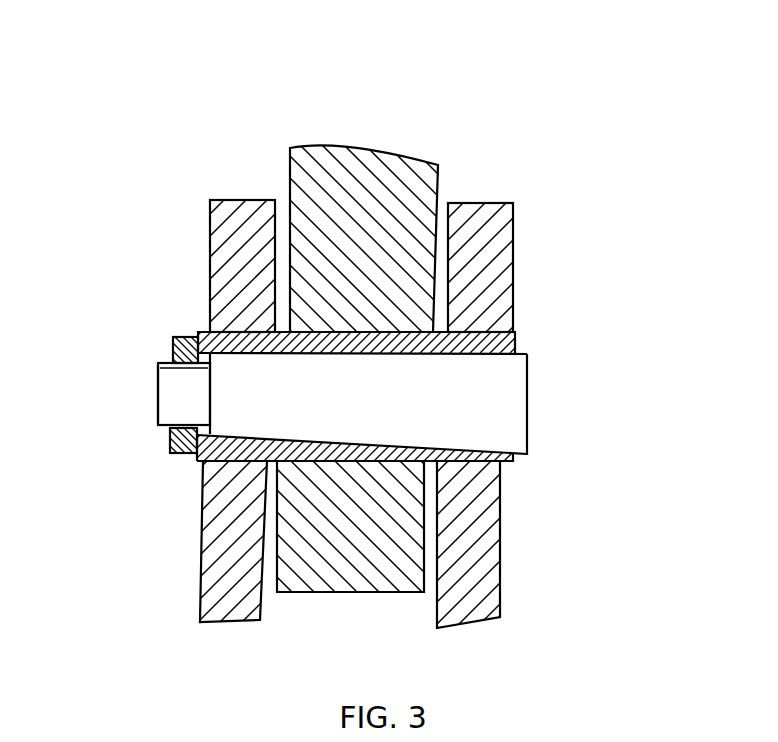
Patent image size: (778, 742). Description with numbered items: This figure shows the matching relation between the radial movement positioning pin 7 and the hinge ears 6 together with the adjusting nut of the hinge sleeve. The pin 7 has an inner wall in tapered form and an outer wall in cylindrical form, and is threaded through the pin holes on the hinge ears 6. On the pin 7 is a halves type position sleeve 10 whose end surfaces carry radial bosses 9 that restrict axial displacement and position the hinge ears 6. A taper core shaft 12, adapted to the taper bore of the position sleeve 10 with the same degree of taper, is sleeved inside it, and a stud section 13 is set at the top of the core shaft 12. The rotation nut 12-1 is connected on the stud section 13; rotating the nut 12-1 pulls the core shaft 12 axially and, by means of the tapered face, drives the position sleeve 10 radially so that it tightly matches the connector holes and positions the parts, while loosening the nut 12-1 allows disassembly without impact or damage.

The hinge ears 6 is at (223, 223).
The pin 7 is at (157, 400).
The boss 9 is at (203, 327).
The position sleeve 10 is at (410, 343).
The core shaft 12 is at (473, 418).
The nut 12-1 is at (180, 337).
The stud section 13 is at (166, 382).